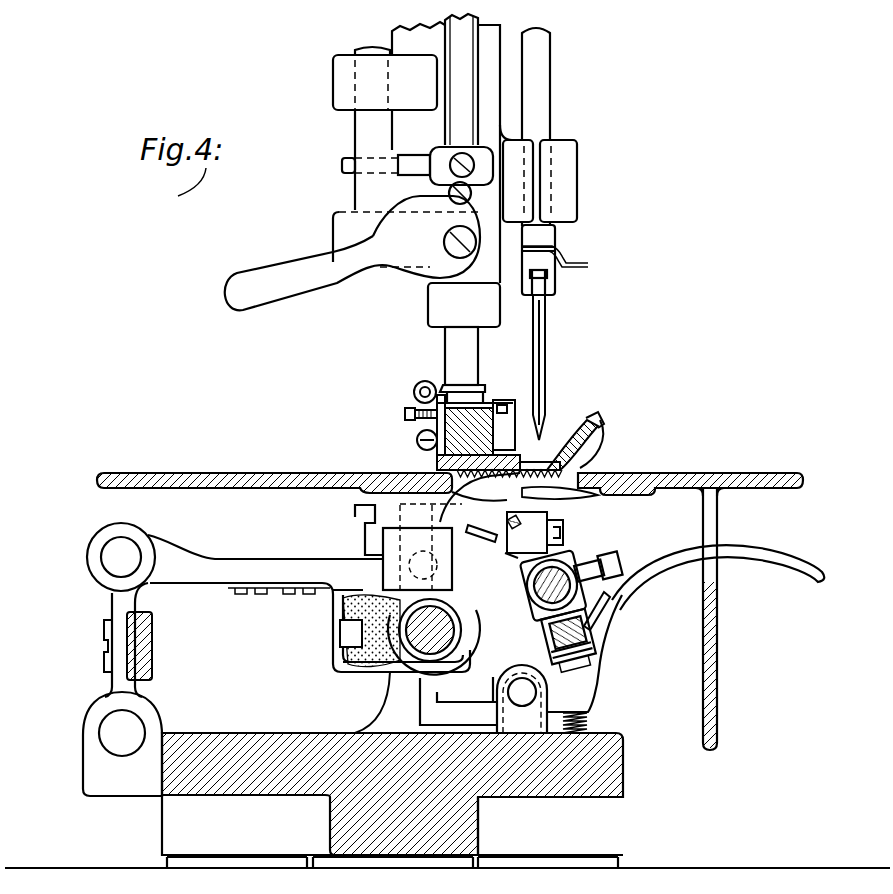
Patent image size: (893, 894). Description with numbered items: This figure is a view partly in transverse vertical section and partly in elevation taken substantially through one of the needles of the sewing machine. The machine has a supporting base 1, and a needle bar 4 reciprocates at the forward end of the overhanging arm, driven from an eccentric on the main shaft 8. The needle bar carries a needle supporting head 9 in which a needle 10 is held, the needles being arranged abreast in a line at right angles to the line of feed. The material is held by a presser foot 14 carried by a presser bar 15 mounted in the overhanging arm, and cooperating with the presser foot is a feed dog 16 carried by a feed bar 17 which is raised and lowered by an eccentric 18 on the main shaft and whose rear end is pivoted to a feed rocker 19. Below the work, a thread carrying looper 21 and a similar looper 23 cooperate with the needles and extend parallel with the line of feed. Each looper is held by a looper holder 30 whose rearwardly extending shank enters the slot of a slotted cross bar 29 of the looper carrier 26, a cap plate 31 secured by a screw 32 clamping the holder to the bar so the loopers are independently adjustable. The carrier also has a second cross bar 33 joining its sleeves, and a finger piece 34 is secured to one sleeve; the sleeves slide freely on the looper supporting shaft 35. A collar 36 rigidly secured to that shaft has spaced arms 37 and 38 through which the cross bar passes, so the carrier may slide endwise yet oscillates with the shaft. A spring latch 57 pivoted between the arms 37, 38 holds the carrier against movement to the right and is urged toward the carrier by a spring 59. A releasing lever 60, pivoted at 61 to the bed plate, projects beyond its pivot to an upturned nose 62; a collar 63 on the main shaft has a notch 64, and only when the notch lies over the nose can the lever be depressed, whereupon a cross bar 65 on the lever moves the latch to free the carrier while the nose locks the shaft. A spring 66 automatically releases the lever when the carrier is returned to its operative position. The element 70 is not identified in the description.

The supporting base 1 is at (612, 770).
The needle bar 4 is at (540, 88).
The main shaft 8 is at (337, 650).
The needle supporting head 9 is at (547, 277).
The needle 10 is at (543, 342).
The presser foot 14 is at (437, 465).
The presser bar 15 is at (462, 343).
The feed dog 16 is at (478, 478).
The feed bar 17 is at (292, 570).
The eccentric 18 is at (412, 607).
The feed rocker 19 is at (121, 643).
The looper 21 is at (565, 488).
The looper 23 is at (684, 475).
The looper carrier 26 is at (575, 555).
The slotted cross bar 29 is at (512, 518).
The looper holder 30 is at (535, 532).
The cap plate 31 is at (528, 560).
The screw 32 is at (500, 543).
The second cross bar 33 is at (556, 663).
The finger piece 34 is at (622, 560).
The looper supporting shaft 35 is at (538, 590).
The collar 36 is at (540, 598).
The arm 37 is at (545, 628).
The arm 38 is at (575, 633).
The spring latch 57 is at (470, 647).
The spring 59 is at (550, 672).
The releasing lever 60 is at (768, 553).
The pivot 61 is at (523, 697).
The upturned nose 62 is at (398, 694).
The collar 63 is at (468, 652).
The notch 64 is at (448, 588).
The cross bar 65 is at (610, 600).
The spring 66 is at (585, 716).
The feed dog 70 is at (563, 510).